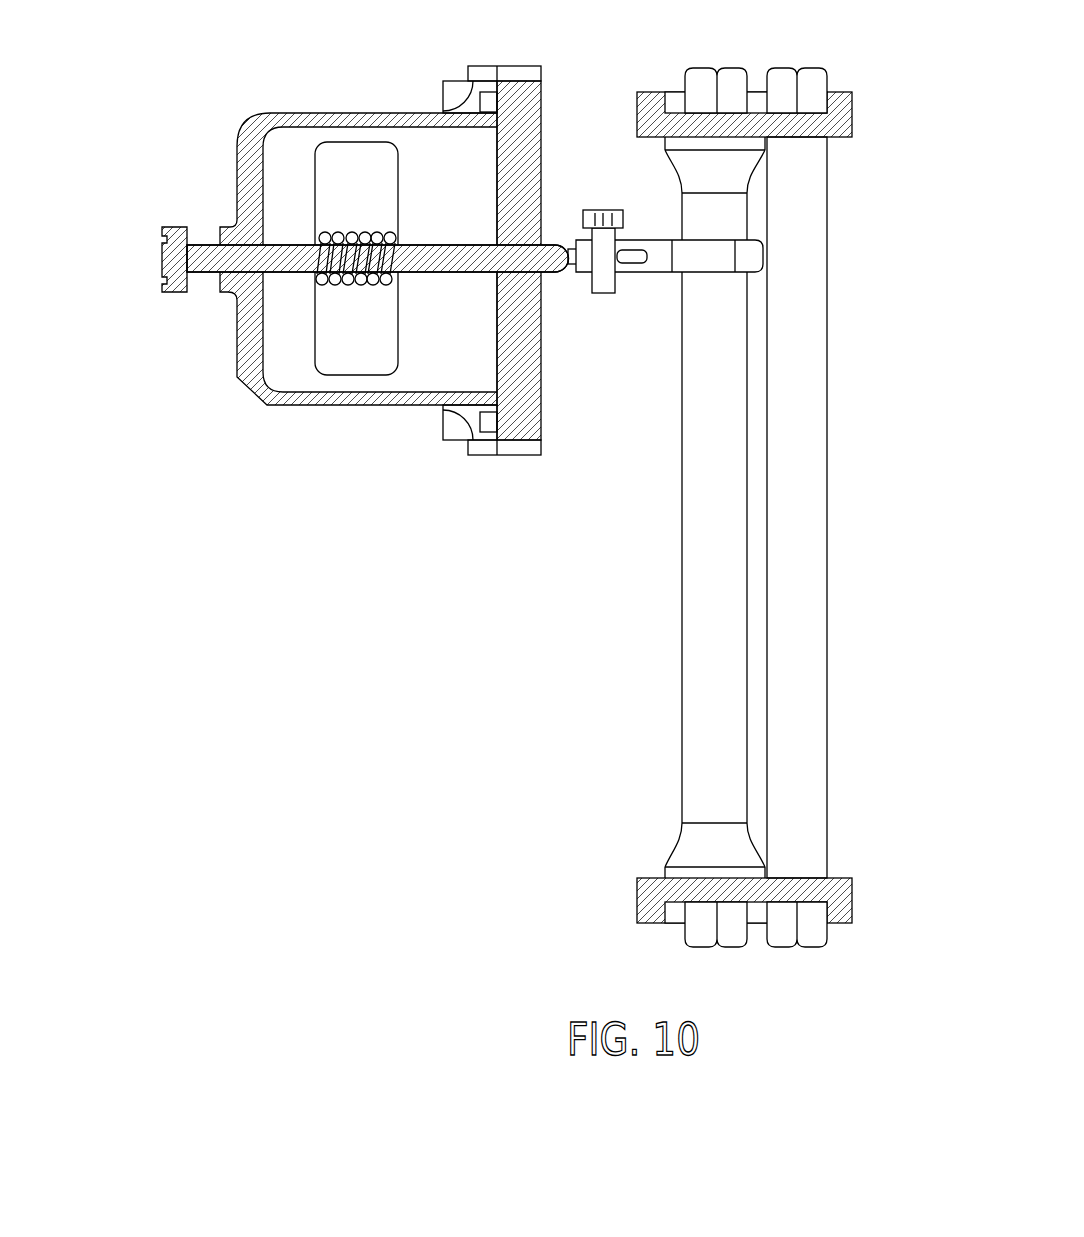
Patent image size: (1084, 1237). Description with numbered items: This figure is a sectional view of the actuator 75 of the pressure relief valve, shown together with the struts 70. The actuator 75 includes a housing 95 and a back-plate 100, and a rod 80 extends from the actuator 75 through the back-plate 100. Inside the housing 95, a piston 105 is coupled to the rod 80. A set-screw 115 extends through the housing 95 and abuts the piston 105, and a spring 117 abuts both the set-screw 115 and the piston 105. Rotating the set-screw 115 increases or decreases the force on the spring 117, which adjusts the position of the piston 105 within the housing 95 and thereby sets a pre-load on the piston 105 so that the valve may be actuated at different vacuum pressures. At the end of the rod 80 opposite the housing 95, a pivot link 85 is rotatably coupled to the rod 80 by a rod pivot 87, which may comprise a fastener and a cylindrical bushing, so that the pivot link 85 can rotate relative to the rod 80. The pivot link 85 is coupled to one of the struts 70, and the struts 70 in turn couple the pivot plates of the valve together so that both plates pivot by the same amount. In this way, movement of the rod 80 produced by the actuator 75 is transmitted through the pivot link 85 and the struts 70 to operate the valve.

The actuator 75 is at (373, 246).
The rod 80 is at (547, 250).
The pivot link 85 is at (660, 263).
The rod pivot 87 is at (605, 293).
The housing 95 is at (285, 405).
The back-plate 100 is at (528, 415).
The piston 105 is at (369, 358).
The set-screw 115 is at (173, 230).
The spring 117 is at (323, 237).
The struts 70 is at (723, 574).